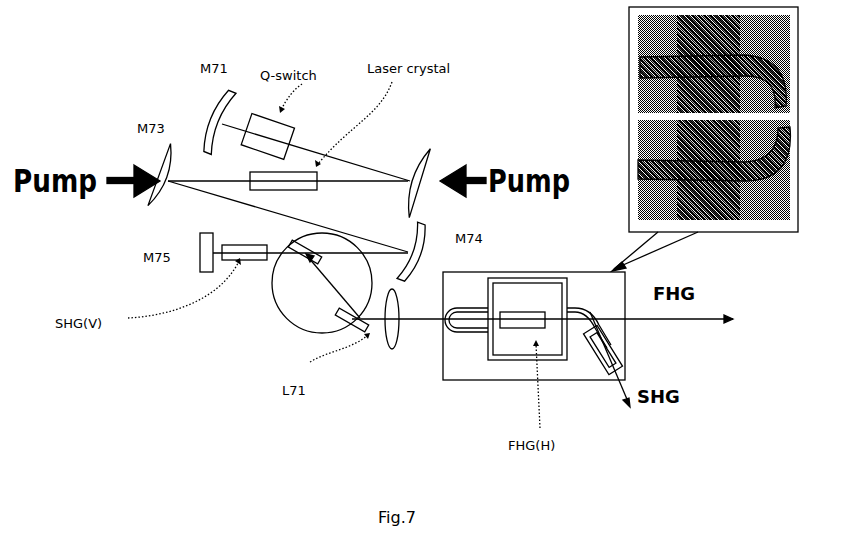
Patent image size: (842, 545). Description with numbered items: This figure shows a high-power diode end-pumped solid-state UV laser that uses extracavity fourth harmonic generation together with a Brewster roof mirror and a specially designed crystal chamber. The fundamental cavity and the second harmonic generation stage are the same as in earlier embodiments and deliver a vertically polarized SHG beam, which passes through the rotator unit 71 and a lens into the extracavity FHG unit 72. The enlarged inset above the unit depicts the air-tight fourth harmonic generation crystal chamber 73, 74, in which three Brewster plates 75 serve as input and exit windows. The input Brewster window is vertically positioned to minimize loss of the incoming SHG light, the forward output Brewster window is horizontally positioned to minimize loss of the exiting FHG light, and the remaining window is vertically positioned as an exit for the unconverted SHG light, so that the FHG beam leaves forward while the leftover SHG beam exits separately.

The polarization rotator unit 71 is at (268, 308).
The fourth harmonic generation unit 72 is at (437, 384).
The fourth harmonic generation crystal chamber 73 is at (641, 38).
The fourth harmonic generation crystal chamber 74 is at (633, 135).
The Brewster plates 75 is at (792, 110).